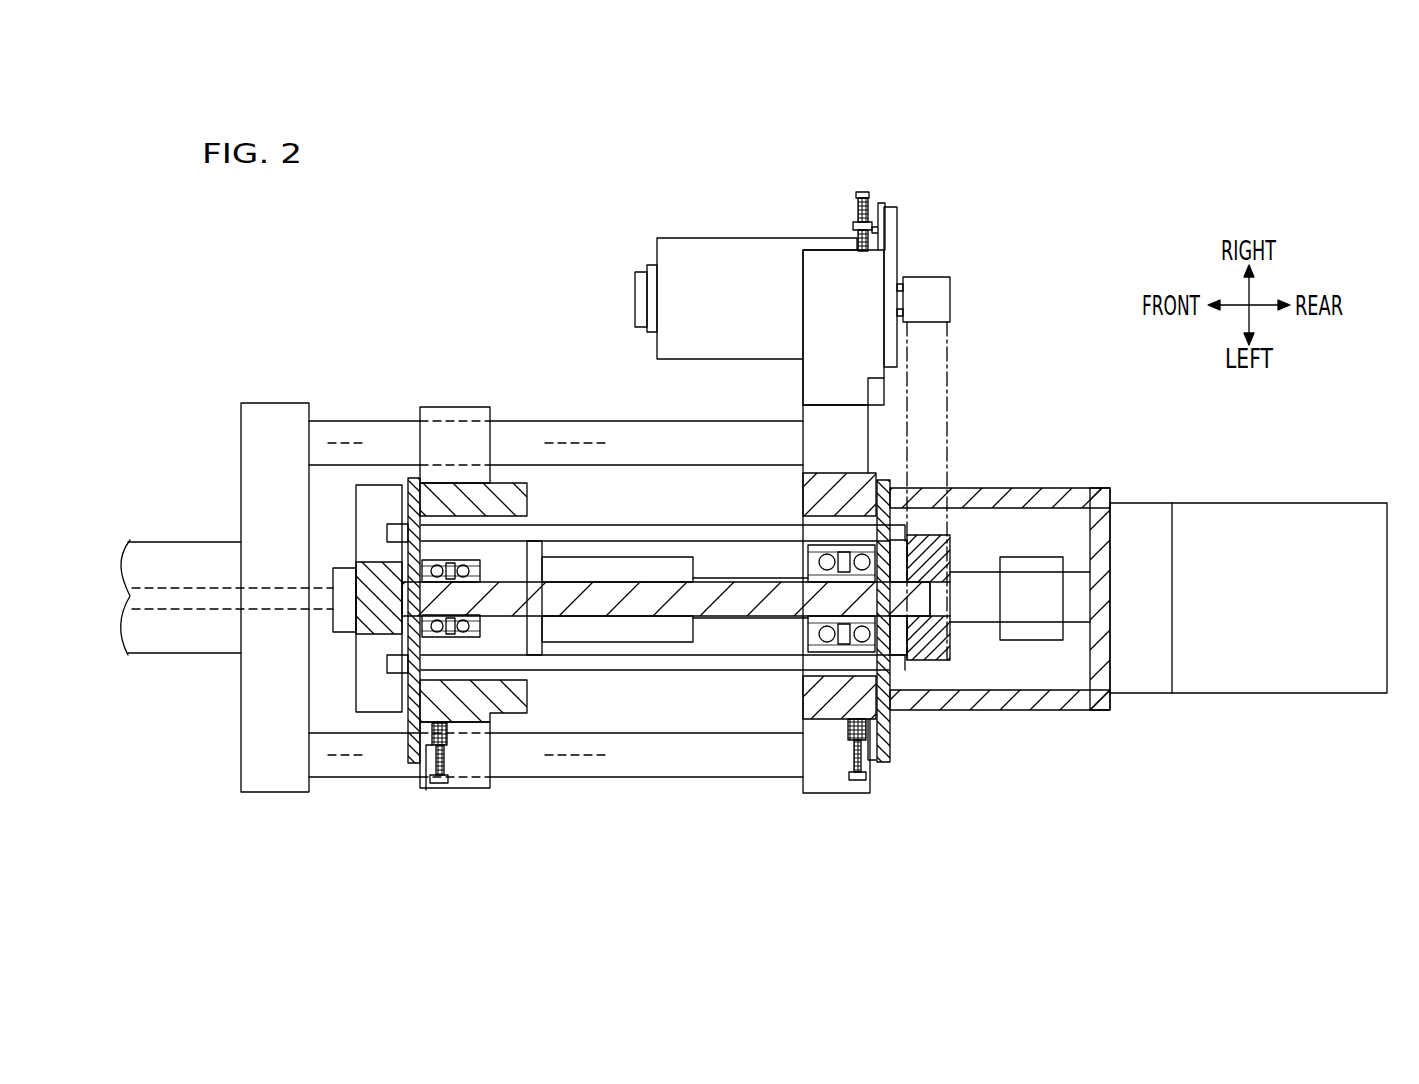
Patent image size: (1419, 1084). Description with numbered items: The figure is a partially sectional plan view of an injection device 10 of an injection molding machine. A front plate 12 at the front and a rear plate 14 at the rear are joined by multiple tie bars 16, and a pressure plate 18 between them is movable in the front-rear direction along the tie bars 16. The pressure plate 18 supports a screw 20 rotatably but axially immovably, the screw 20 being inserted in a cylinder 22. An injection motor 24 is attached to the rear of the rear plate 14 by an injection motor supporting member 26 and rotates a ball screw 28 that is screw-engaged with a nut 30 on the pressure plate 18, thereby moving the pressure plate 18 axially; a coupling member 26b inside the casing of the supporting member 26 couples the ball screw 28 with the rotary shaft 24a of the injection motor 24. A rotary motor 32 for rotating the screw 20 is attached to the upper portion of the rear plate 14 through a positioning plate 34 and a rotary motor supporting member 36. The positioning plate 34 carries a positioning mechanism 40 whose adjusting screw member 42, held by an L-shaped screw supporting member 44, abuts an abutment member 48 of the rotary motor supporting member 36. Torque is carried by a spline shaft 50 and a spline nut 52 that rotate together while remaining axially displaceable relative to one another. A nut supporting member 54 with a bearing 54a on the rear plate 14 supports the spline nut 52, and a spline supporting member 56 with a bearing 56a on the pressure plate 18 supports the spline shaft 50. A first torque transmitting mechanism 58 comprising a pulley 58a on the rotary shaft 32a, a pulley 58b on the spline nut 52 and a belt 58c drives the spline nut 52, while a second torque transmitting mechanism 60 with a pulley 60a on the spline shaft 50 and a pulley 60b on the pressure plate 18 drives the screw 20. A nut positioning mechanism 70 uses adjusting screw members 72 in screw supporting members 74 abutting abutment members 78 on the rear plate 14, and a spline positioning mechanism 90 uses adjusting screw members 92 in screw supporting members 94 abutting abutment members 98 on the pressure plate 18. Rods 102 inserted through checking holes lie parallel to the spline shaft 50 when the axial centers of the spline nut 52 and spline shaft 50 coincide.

The injection device 10 is at (454, 215).
The front plate 12 is at (276, 794).
The rear plate 14 is at (836, 792).
The tie bar 16 is at (598, 430).
The pressure plate 18 is at (466, 790).
The screw 20 is at (178, 615).
The cylinder 22 is at (169, 539).
The injection motor 24 is at (1243, 525).
The rotary shaft 24a is at (1095, 600).
The injection motor supporting member 26 is at (975, 488).
The coupling member 26b is at (1043, 630).
The ball screw 28 is at (746, 576).
The nut 30 is at (680, 567).
The rotary motor 32 is at (684, 237).
The rotary shaft 32a is at (895, 297).
The positioning plate 34 is at (900, 222).
The rotary motor supporting member 36 is at (803, 378).
The positioning mechanism 40 is at (863, 188).
The adjusting screw member 42 is at (856, 197).
The screw supporting member 44 is at (881, 207).
The abutment member 48 is at (823, 283).
The spline shaft 50 is at (728, 612).
The spline nut 52 is at (898, 625).
The nut supporting member 54 is at (891, 750).
The bearing 54a is at (845, 545).
The spline supporting member 56 is at (416, 478).
The bearing 56a is at (450, 562).
The first torque transmitting mechanism 58 is at (953, 333).
The pulley 58a is at (933, 277).
The pulley 58b is at (950, 548).
The belt 58c is at (947, 393).
The second torque transmitting mechanism 60 is at (345, 550).
The pulley 60a is at (372, 578).
The pulley 60b is at (375, 680).
The nut positioning mechanism 70 is at (845, 757).
The adjusting screw member 72 is at (858, 782).
The screw supporting member 74 is at (848, 737).
The abutment member 78 is at (823, 498).
The spline positioning mechanism 90 is at (460, 753).
The adjusting screw member 92 is at (440, 790).
The screw supporting member 94 is at (430, 776).
The abutment member 98 is at (513, 498).
The rod 102 is at (662, 537).